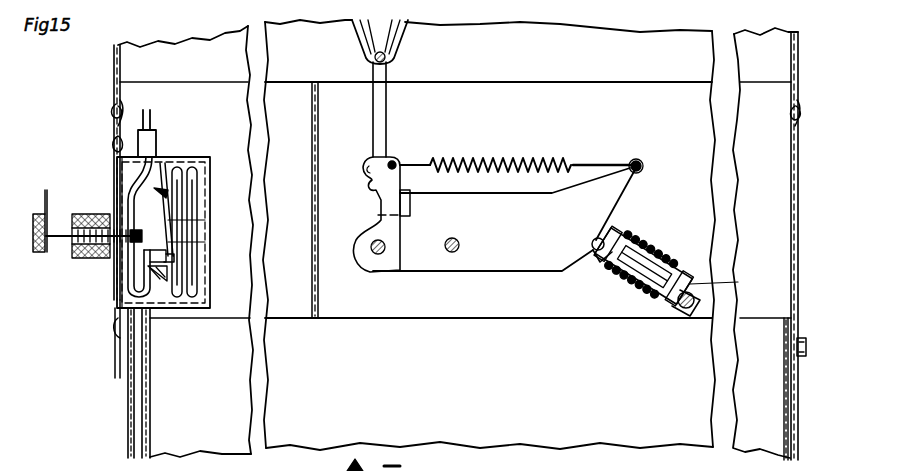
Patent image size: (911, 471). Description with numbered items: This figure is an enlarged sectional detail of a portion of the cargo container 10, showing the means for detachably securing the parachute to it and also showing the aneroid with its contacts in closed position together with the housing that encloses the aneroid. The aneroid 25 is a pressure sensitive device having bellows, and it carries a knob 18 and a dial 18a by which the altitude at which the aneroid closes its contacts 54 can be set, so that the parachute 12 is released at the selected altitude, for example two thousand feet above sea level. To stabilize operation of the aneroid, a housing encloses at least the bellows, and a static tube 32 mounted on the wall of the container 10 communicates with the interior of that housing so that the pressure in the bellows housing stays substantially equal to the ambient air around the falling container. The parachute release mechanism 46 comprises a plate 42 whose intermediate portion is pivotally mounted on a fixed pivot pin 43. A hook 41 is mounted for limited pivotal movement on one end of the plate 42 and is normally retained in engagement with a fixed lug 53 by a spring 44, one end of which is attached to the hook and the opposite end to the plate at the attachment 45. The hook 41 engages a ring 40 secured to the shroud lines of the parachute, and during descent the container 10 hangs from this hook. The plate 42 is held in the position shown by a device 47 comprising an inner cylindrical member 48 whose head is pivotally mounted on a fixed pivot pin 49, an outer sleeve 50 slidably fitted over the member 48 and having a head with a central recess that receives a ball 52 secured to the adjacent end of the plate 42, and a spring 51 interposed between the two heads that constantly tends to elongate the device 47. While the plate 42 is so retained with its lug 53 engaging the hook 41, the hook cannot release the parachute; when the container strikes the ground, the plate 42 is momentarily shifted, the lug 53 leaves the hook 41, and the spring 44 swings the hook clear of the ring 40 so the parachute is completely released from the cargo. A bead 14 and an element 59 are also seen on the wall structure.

The cargo container 10 is at (128, 402).
The parachute 12 is at (114, 64).
The bead seam 14 is at (114, 112).
The knob 18 is at (36, 212).
The dial 18a is at (120, 170).
The aneroid 25 is at (190, 165).
The static tube 32 is at (150, 402).
The ring 40 is at (387, 107).
The hook 41 is at (394, 160).
The plate 42 is at (408, 269).
The fixed pivot pin 43 is at (456, 253).
The spring 44 is at (526, 160).
The spring attachment 45 is at (640, 161).
The parachute release mechanism 46 is at (470, 142).
The release device 47 is at (643, 253).
The inner cylindrical member 48 is at (682, 274).
The fixed pivot pin 49 is at (688, 310).
The outer sleeve 50 is at (604, 268).
The spring 51 is at (646, 236).
The ball 52 is at (590, 246).
The fixed lug 53 is at (412, 207).
The contacts 54 is at (124, 251).
The bimetal strip 59 is at (132, 216).